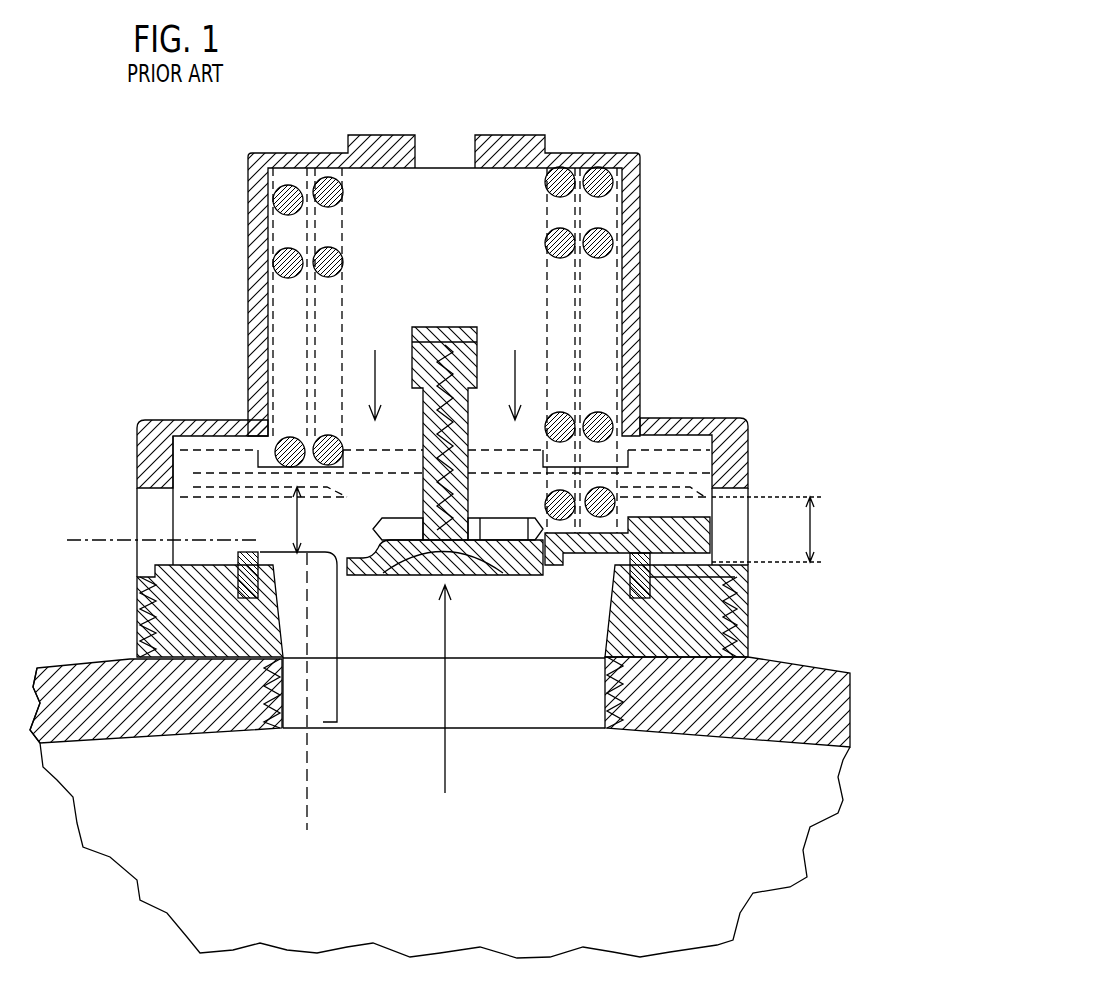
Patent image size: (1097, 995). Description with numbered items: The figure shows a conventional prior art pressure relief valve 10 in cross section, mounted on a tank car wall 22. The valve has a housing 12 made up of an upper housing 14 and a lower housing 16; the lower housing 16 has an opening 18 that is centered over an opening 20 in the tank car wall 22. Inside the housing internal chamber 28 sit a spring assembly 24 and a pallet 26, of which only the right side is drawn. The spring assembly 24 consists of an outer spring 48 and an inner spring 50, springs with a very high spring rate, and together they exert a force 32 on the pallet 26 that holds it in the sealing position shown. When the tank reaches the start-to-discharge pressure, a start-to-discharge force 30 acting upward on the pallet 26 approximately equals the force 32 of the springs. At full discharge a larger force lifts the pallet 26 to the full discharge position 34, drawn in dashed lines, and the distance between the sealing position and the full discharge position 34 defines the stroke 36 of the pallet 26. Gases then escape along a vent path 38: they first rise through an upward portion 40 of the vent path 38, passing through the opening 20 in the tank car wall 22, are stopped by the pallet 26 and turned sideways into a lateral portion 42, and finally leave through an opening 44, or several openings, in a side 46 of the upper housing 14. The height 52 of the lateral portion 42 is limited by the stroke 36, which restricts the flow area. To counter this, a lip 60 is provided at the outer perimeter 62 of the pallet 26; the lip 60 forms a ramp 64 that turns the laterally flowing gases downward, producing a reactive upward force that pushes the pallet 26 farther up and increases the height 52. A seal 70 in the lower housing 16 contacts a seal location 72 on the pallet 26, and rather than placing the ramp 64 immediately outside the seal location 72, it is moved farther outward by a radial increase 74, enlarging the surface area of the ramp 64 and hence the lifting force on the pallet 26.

The pressure relief valve 10 is at (710, 93).
The housing 12 is at (693, 418).
The upper housing 14 is at (640, 290).
The lower housing 16 is at (750, 648).
The opening 18 is at (513, 633).
The opening 20 is at (511, 705).
The tank car wall 22 is at (807, 657).
The spring assembly 24 is at (523, 232).
The pallet 26 is at (690, 510).
The housing internal chamber 28 is at (431, 282).
The start-to-discharge force 30 is at (447, 768).
The force 32 is at (378, 367).
The full discharge position 34 is at (140, 430).
The stroke 36 is at (812, 527).
The vent path 38 is at (310, 820).
The upward portion 40 is at (335, 637).
The lateral portion 42 is at (217, 512).
The opening 44 is at (150, 553).
The side 46 is at (173, 450).
The outer spring 48 is at (283, 263).
The inner spring 50 is at (330, 262).
The height 52 is at (300, 520).
The lip 60 is at (198, 490).
The outer perimeter 62 is at (449, 492).
The ramp 64 is at (185, 478).
The seal 70 is at (240, 572).
The seal location 72 is at (247, 480).
The radial increase 74 is at (217, 473).